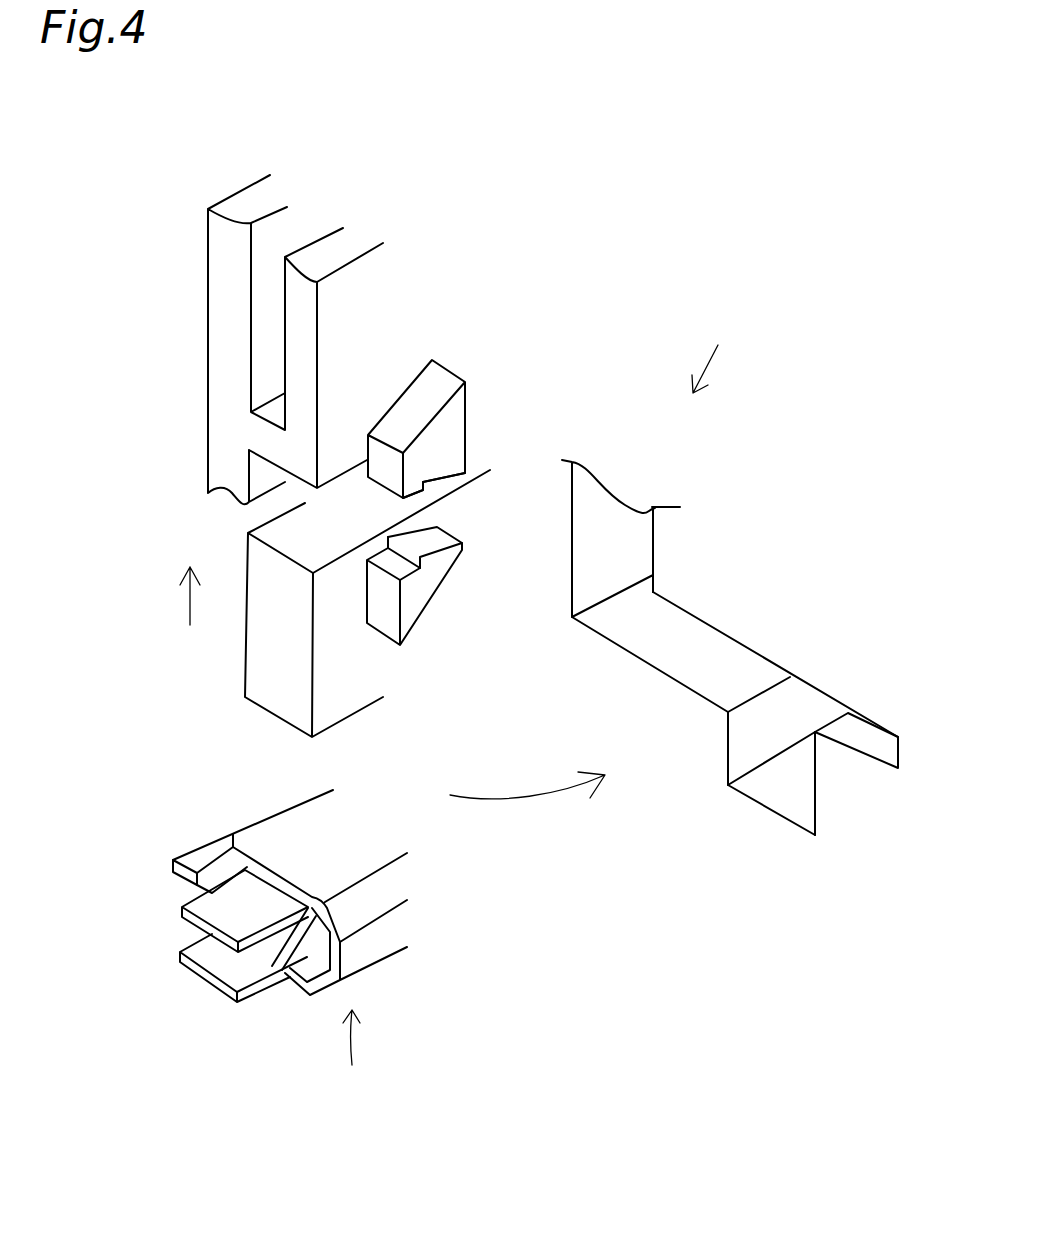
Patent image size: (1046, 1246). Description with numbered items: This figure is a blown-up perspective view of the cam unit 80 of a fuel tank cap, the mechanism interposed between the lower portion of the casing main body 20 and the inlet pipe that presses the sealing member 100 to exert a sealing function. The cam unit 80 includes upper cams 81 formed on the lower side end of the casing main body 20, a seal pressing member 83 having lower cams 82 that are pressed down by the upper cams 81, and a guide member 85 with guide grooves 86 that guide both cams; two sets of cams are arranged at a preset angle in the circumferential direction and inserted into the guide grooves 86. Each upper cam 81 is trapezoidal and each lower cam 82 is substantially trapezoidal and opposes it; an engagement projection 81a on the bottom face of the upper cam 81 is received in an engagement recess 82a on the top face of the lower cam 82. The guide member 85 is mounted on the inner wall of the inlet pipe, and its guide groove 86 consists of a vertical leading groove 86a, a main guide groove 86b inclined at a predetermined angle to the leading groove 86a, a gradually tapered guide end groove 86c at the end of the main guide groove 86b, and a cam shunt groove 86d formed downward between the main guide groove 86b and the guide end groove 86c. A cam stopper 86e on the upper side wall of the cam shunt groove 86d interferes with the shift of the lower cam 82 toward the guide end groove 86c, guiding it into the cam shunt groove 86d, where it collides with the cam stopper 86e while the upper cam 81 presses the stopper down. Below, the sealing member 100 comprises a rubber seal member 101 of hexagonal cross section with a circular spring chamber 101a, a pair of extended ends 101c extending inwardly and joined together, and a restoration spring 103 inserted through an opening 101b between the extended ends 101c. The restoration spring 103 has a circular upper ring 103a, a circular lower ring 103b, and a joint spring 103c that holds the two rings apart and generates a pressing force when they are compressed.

The casing main body 20 is at (345, 307).
The cam unit 80 is at (732, 352).
The upper cam 81 is at (460, 415).
The engagement projection 81a is at (408, 490).
The lower cam 82 is at (432, 587).
The engagement recess 82a is at (398, 563).
The seal pressing member 83 is at (352, 688).
The guide member 85 is at (748, 639).
The guide groove 86 is at (732, 653).
The leading groove 86a is at (640, 528).
The main guide groove 86b is at (673, 617).
The guide end groove 86c is at (848, 722).
The cam shunt groove 86d is at (800, 803).
The cam stopper 86e is at (813, 738).
The sealing member 100 is at (363, 1055).
The rubber seal member 101 is at (373, 952).
The spring chamber 101a is at (242, 870).
The opening 101b is at (170, 878).
The extended ends 101c is at (173, 858).
The restoration spring 103 is at (189, 991).
The upper ring 103a is at (176, 909).
The lower ring 103b is at (257, 992).
The joint spring 103c is at (273, 952).